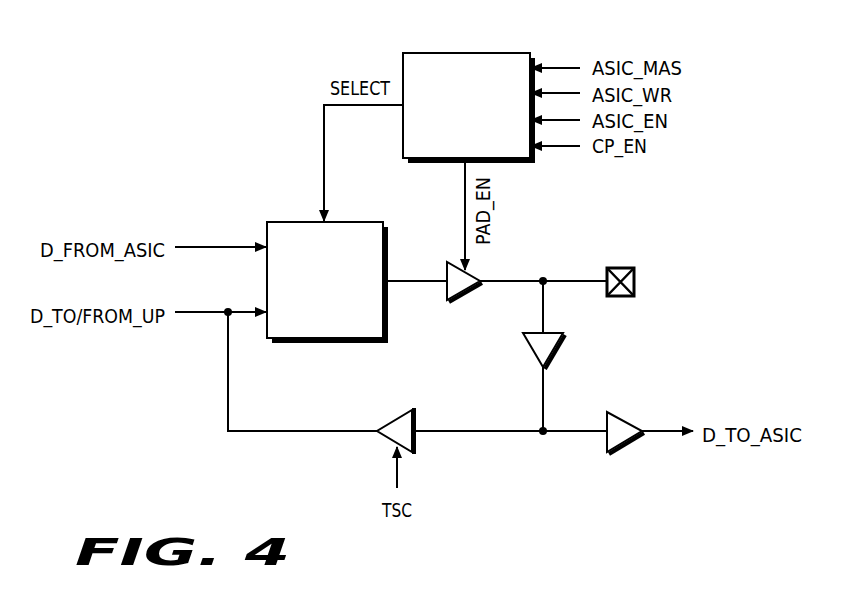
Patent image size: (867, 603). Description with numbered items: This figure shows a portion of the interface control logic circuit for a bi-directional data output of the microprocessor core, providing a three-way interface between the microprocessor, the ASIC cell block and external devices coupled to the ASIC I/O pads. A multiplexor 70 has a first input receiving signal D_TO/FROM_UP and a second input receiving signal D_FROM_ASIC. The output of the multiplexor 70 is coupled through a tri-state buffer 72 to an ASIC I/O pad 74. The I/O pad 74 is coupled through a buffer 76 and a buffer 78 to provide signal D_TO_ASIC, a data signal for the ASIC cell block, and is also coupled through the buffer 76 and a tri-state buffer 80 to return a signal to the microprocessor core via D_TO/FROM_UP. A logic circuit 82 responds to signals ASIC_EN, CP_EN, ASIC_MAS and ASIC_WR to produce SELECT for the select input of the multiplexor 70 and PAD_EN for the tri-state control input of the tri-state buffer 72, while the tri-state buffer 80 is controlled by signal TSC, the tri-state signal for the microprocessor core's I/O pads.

The multiplexor 70 is at (305, 343).
The tri-state buffer 72 is at (478, 292).
The ASIC I/O pad 74 is at (622, 266).
The buffer 76 is at (553, 348).
The buffer 78 is at (624, 448).
The tri-state buffer 80 is at (393, 415).
The logic circuit 82 is at (444, 53).